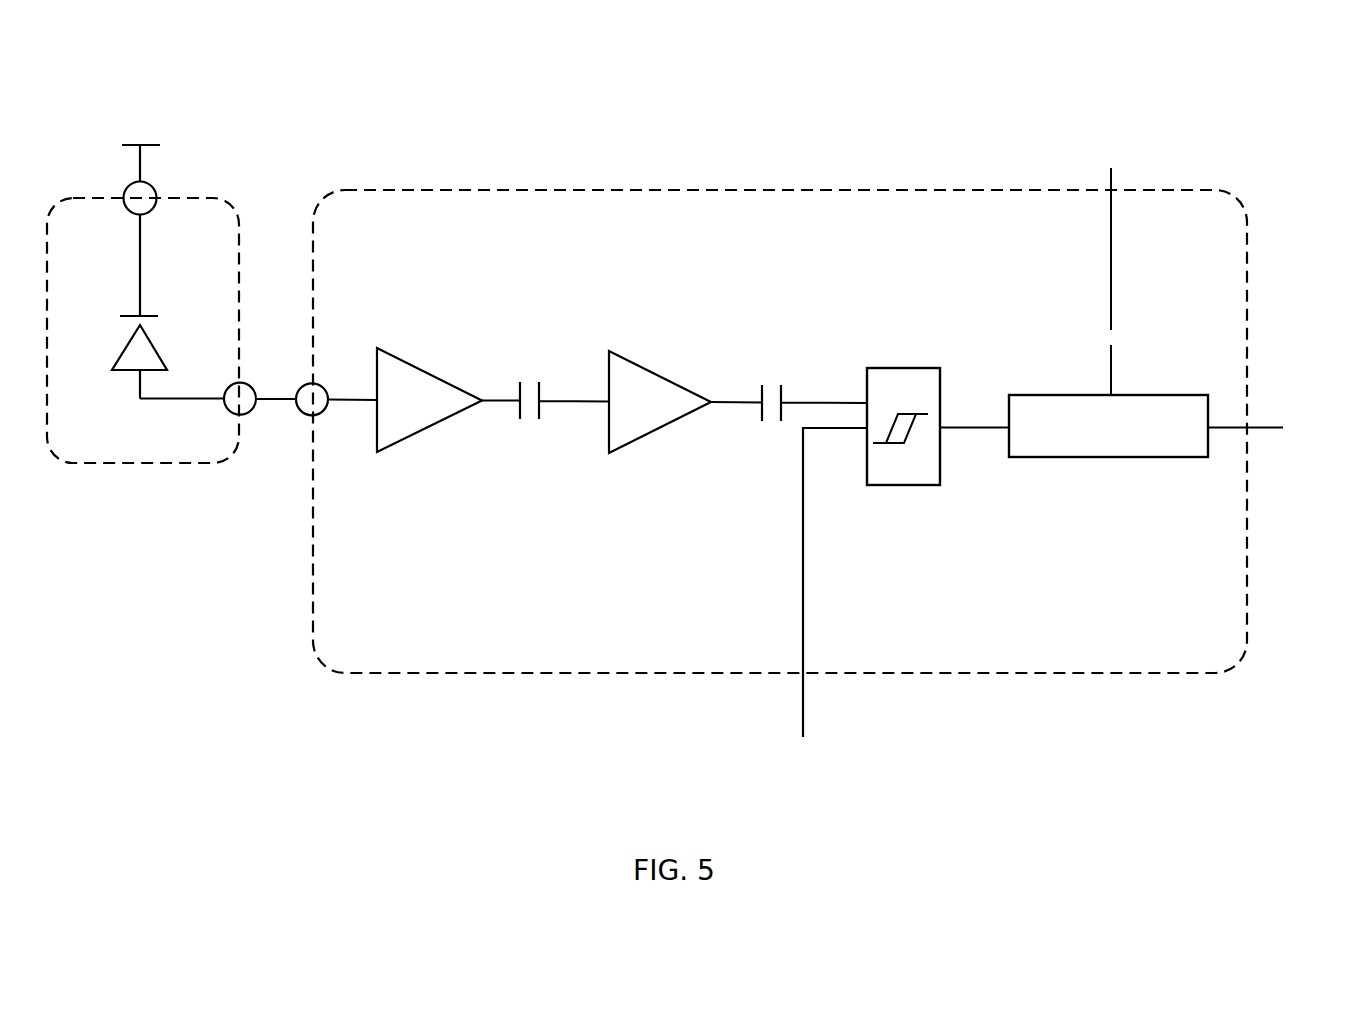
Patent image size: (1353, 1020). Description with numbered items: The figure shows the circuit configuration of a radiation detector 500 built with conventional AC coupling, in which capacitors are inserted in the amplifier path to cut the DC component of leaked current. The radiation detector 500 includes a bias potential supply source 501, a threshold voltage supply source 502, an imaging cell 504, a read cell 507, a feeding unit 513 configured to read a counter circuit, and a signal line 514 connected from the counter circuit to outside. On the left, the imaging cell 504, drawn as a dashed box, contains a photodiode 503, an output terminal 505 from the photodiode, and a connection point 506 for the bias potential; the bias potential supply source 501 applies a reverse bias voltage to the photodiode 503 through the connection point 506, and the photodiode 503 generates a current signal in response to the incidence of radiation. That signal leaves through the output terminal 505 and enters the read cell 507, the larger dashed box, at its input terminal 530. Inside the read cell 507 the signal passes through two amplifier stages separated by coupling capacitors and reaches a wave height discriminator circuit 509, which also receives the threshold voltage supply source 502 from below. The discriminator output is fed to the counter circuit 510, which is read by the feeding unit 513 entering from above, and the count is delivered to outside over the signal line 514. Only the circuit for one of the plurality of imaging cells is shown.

The radiation detector 500 is at (717, 96).
The bias potential supply source 501 is at (140, 142).
The threshold voltage supply source 502 is at (803, 757).
The photodiode 503 is at (154, 342).
The imaging cell 504 is at (98, 465).
The output terminal 505 is at (247, 415).
The connection point 506 is at (155, 184).
The read cell 507 is at (777, 190).
The wave height discriminator circuit 509 is at (940, 395).
The counter circuit 510 is at (1122, 394).
The feeding unit 513 is at (1111, 112).
The signal line 514 is at (1344, 428).
The input terminal 530 is at (303, 383).